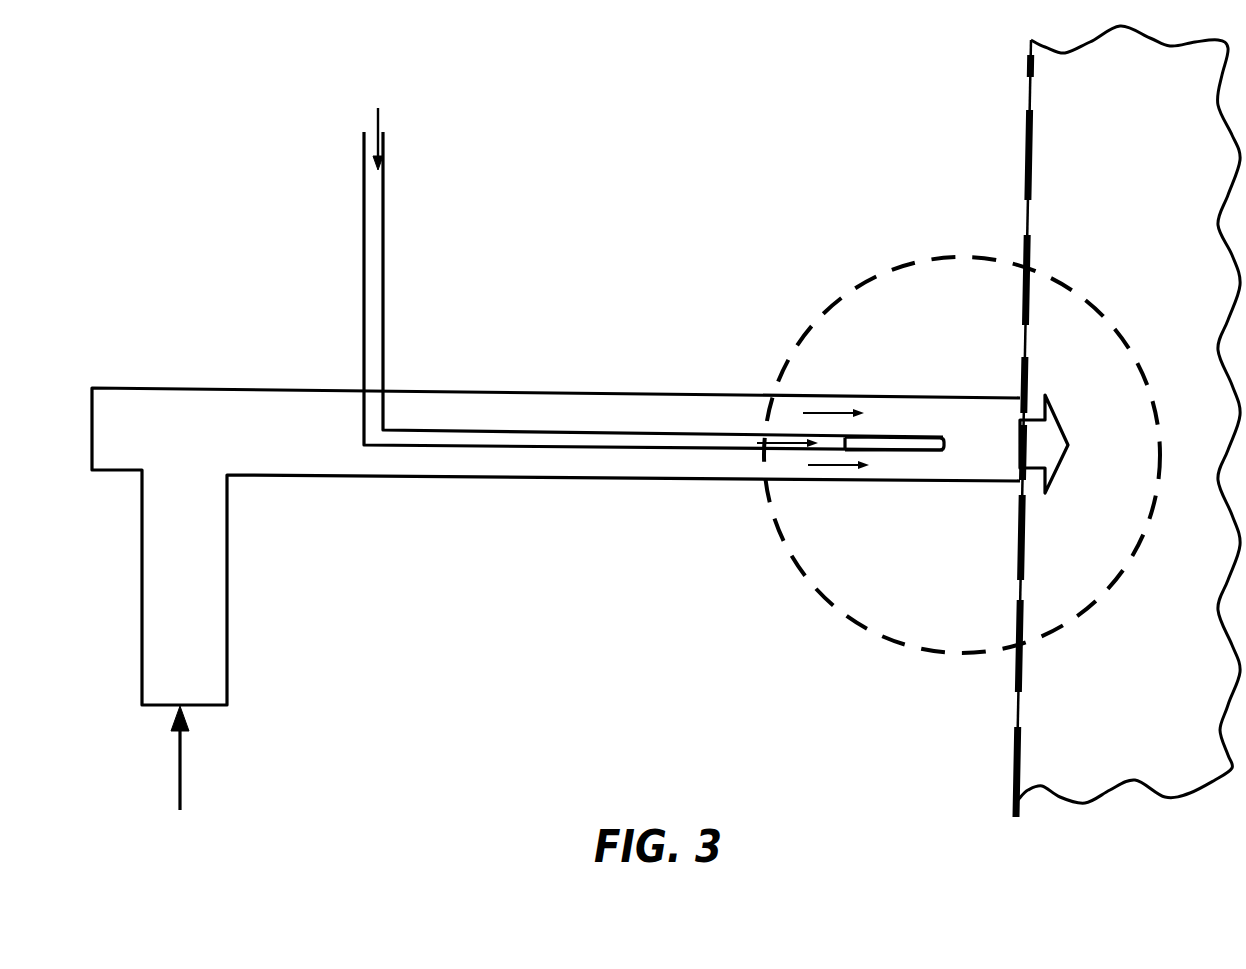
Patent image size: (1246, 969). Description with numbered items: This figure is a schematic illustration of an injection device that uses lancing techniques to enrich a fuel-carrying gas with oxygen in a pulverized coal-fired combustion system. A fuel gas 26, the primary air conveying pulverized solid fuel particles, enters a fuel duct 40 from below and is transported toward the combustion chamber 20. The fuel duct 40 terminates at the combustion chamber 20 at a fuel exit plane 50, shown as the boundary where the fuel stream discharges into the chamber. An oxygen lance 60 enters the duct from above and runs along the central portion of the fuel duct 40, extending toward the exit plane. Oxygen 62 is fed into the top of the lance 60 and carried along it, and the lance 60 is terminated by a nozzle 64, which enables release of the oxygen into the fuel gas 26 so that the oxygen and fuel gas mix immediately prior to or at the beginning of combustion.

The combustion chamber 20 is at (1126, 456).
The fuel gas 26 is at (182, 762).
The fuel duct 40 is at (258, 446).
The fuel exit plane 50 is at (1012, 766).
The oxygen lance 60 is at (385, 250).
The oxygen 62 is at (379, 123).
The nozzle 64 is at (897, 437).